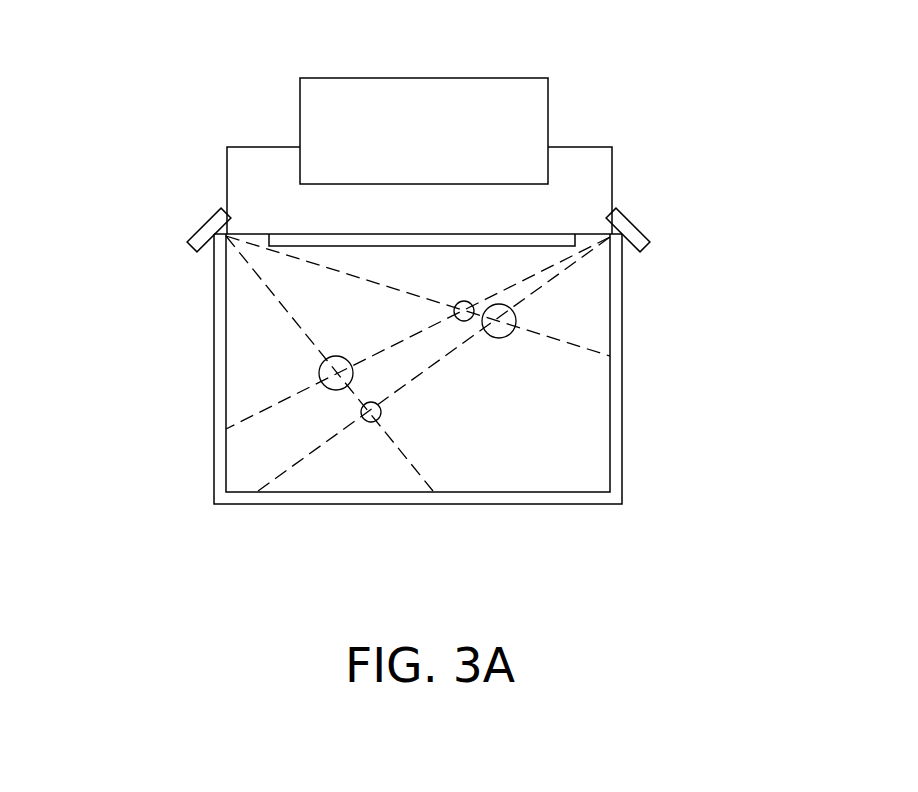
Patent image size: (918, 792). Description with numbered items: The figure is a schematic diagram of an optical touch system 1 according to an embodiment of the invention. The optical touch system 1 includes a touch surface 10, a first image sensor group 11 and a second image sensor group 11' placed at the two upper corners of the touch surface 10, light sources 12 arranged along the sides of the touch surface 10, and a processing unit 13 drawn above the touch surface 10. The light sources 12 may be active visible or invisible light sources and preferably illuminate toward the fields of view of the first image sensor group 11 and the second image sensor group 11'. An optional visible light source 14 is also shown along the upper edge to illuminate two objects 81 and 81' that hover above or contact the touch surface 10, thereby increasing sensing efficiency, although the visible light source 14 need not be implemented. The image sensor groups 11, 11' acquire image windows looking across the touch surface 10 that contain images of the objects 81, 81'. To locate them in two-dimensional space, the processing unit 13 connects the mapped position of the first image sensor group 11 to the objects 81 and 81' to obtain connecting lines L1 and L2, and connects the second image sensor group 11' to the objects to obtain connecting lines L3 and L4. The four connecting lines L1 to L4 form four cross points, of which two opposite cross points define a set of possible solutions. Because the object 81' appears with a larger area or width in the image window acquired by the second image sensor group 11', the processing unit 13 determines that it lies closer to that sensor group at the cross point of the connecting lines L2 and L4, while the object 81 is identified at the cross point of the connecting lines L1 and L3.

The optical touch system 1 is at (724, 122).
The touch surface 10 is at (599, 282).
The first image sensor group 11 is at (165, 224).
The second image sensor group 11' is at (669, 208).
The light sources 12 is at (222, 456).
The processing unit 13 is at (362, 78).
The visible light source 14 is at (277, 234).
The object 81 is at (299, 474).
The object 81' is at (594, 350).
The connecting line L1 is at (297, 328).
The connecting line L2 is at (318, 262).
The connecting line L3 is at (538, 274).
The connecting line L4 is at (537, 297).